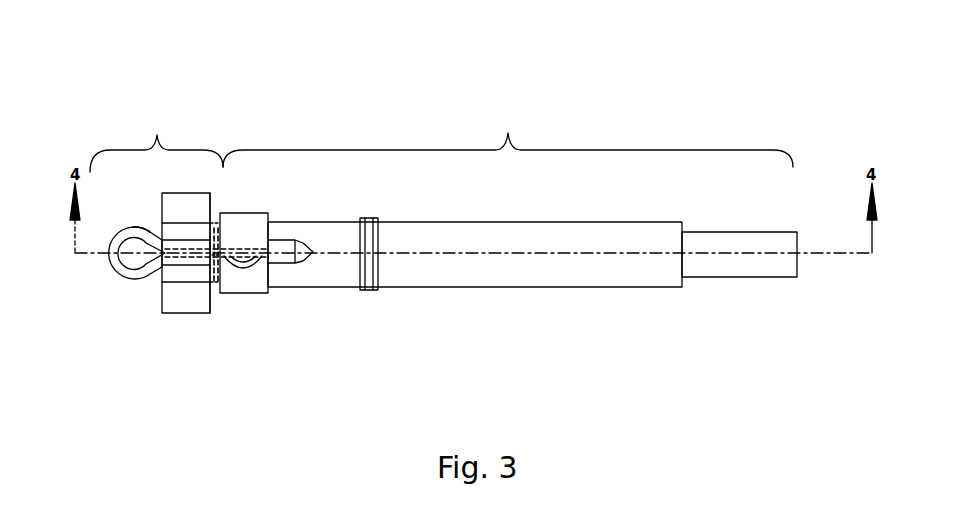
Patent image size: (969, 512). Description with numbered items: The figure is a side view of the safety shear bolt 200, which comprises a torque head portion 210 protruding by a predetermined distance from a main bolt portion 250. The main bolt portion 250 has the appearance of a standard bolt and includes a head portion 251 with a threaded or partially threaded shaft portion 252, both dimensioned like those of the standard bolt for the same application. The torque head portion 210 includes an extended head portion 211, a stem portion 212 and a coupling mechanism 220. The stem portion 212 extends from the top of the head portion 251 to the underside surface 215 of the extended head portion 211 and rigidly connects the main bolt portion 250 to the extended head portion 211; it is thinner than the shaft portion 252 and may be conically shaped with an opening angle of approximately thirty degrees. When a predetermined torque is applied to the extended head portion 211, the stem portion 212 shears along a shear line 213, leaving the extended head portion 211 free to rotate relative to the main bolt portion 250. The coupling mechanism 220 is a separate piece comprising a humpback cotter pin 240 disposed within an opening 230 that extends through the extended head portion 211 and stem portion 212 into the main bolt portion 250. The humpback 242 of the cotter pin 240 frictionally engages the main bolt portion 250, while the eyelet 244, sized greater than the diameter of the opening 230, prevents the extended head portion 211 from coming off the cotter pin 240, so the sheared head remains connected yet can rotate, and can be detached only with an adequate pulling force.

The safety shear bolt 200 is at (253, 64).
The torque head portion 210 is at (175, 250).
The extended head portion 211 is at (177, 318).
The stem portion 212 is at (214, 284).
The shear line 213 is at (218, 226).
The underside surface 215 is at (213, 201).
The coupling mechanism 220 is at (160, 280).
The opening 230 is at (284, 237).
The humpback cotter pin 240 is at (111, 266).
The humpback 242 is at (243, 277).
The eyelet 244 is at (130, 235).
The main bolt portion 250 is at (508, 230).
The head portion 251 is at (261, 212).
The shaft portion 252 is at (585, 217).